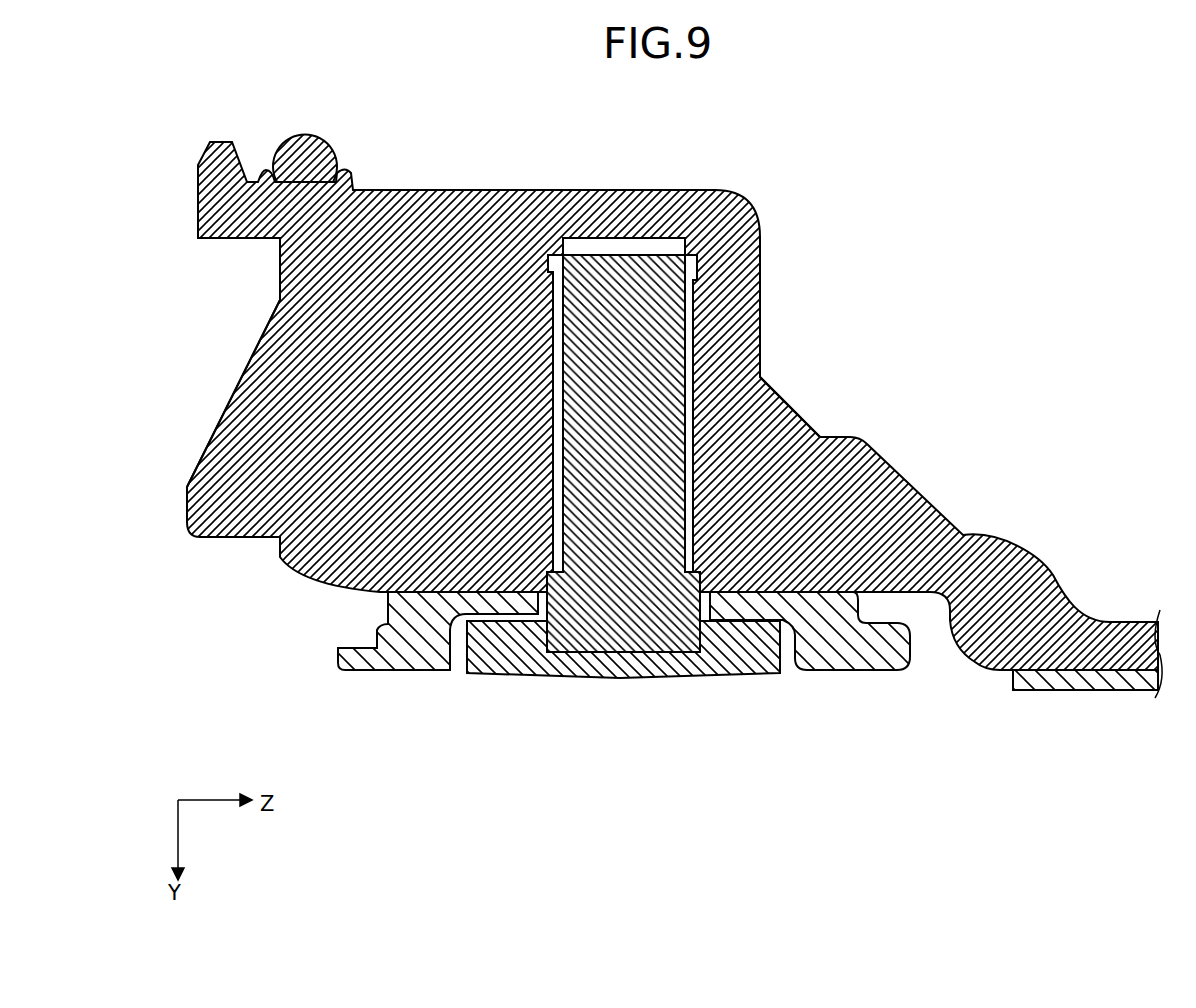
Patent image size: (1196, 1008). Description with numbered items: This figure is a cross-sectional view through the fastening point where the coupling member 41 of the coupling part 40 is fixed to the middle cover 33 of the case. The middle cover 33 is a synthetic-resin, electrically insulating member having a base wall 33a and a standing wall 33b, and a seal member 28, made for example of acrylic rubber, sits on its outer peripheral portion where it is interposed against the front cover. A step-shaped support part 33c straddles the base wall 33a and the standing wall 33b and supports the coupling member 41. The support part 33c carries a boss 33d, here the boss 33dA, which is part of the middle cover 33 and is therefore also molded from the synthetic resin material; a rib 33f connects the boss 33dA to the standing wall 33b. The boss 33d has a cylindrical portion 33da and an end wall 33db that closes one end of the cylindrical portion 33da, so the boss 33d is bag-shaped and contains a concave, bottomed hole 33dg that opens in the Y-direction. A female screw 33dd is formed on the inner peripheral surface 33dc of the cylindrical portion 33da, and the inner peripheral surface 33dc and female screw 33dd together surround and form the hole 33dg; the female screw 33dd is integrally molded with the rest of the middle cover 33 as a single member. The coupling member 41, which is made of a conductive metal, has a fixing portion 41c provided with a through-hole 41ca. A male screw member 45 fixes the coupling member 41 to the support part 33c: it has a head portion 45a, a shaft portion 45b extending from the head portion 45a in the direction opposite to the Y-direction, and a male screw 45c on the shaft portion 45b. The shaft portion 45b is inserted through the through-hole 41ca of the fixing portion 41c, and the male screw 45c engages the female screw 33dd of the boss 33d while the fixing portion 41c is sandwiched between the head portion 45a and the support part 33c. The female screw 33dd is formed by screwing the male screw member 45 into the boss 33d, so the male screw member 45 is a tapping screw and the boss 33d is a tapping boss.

The seal member 28 is at (301, 130).
The middle cover 33 is at (686, 420).
The base wall 33a is at (1113, 622).
The standing wall 33b is at (245, 378).
The rib 33f is at (447, 245).
The support part 33c is at (772, 592).
The boss 33d is at (703, 529).
The boss 33dA is at (703, 529).
The cylindrical portion 33da is at (553, 455).
The end wall 33db is at (652, 241).
The inner peripheral surface 33dc is at (660, 544).
The female screw 33dd is at (553, 526).
The hole 33dg is at (700, 432).
The coupling part 40 is at (426, 688).
The coupling member 41 is at (426, 688).
The fixing portion 41c is at (370, 675).
The through-hole 41ca is at (537, 606).
The male screw member 45 is at (623, 695).
The head portion 45a is at (510, 678).
The shaft portion 45b is at (618, 281).
The male screw 45c is at (556, 318).